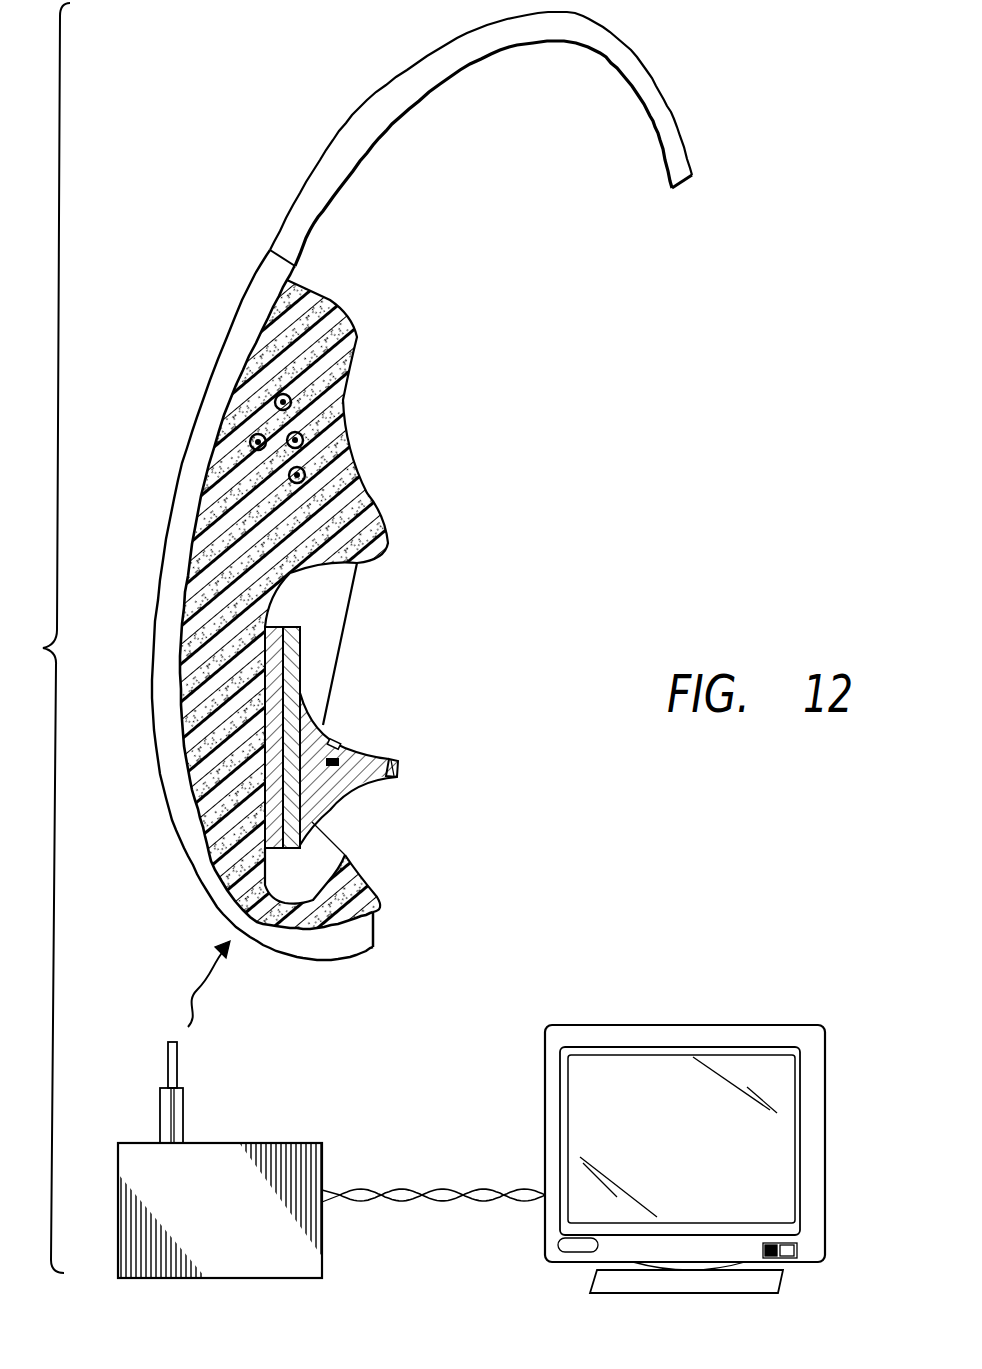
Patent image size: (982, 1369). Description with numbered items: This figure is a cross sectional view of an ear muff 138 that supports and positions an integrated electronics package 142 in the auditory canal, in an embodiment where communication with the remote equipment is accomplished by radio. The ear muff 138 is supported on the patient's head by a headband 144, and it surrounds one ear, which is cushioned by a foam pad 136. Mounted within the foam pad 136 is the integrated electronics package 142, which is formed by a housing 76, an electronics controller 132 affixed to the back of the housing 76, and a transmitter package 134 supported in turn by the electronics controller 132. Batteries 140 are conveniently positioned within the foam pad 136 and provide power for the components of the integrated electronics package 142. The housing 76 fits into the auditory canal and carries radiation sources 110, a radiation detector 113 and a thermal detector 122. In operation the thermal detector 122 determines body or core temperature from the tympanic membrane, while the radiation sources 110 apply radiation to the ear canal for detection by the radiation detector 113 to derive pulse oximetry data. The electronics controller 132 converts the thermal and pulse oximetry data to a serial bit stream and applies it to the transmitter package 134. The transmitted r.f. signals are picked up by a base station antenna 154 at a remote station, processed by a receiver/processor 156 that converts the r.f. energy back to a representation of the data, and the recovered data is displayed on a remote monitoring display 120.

The headband 144 is at (417, 65).
The ear muff 138 is at (256, 272).
The foam pad 136 is at (383, 522).
The batteries 140 is at (260, 390).
The integrated electronics package 142 is at (365, 650).
The electronics controller 132 is at (304, 641).
The transmitter package 134 is at (270, 850).
The radiation sources 110 is at (333, 745).
The radiation detector 113 is at (345, 790).
The housing 76 is at (377, 760).
The thermal detector 122 is at (398, 768).
The remote monitoring display 120 is at (687, 1025).
The base station antenna 154 is at (158, 1120).
The receiver/processor 156 is at (267, 1143).